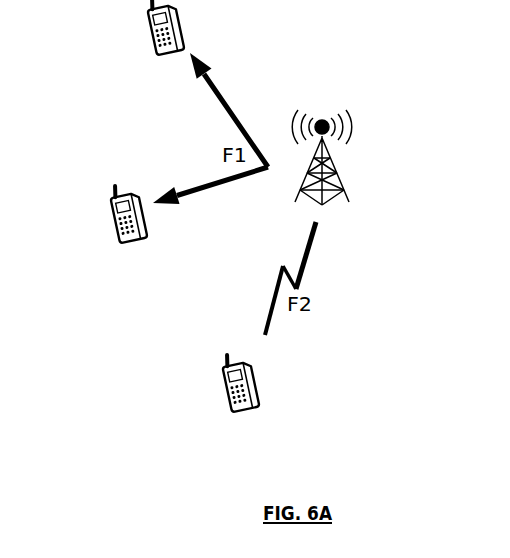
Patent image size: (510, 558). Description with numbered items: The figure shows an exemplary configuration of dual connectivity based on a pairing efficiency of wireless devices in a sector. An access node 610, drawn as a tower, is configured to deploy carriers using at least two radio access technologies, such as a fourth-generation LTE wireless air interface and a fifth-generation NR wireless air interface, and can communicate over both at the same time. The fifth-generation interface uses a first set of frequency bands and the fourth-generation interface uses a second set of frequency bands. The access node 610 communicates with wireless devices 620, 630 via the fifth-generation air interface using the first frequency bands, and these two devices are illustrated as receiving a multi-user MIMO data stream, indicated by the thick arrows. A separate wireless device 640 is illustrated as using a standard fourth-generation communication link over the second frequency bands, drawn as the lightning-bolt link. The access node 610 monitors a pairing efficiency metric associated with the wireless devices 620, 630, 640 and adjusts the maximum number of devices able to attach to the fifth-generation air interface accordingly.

The access node 610 is at (338, 183).
The wireless device 620 is at (152, 53).
The wireless device 630 is at (117, 236).
The wireless device 640 is at (228, 407).